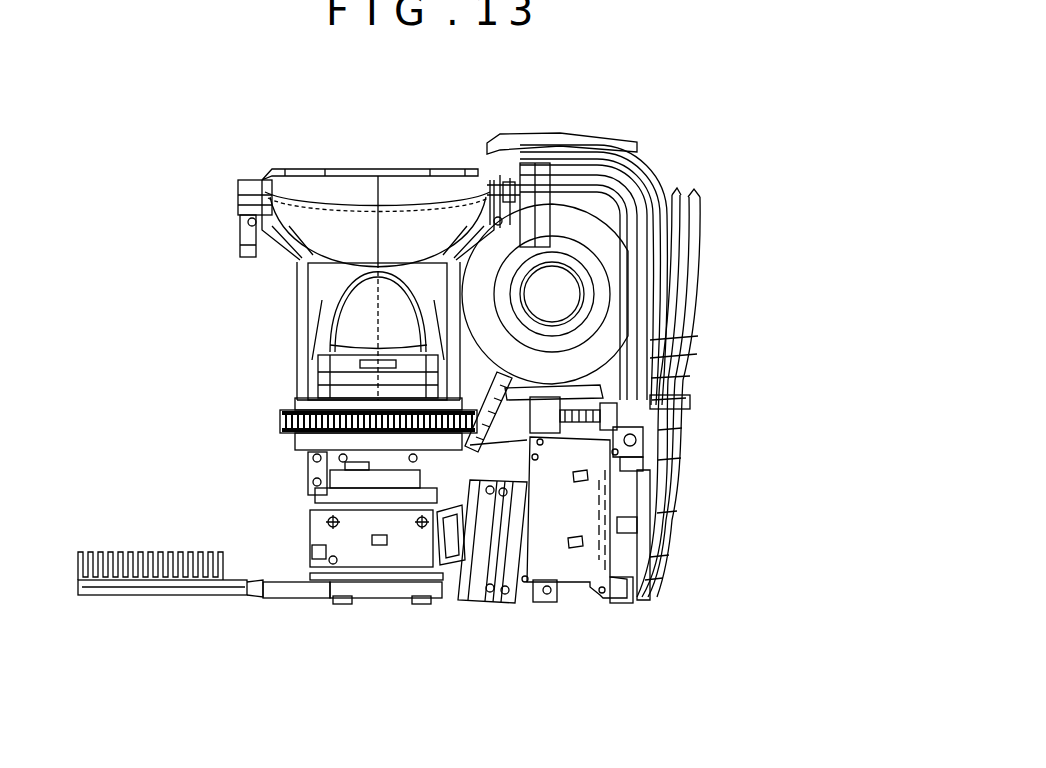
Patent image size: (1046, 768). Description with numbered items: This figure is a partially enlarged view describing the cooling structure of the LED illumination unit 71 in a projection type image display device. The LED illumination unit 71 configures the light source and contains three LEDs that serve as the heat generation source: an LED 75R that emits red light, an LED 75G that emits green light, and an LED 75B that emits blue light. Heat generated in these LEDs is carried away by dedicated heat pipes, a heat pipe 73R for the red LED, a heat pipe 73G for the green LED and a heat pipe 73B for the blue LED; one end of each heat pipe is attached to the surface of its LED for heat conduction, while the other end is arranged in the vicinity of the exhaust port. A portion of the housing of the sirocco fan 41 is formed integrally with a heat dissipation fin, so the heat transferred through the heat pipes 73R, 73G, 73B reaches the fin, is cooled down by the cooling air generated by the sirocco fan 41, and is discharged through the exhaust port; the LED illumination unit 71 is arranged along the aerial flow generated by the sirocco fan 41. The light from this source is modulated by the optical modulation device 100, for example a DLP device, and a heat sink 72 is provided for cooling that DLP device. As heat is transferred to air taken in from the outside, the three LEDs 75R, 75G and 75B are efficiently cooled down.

The sirocco fan 41 is at (603, 352).
The LED illumination unit 71 is at (547, 548).
The heat sink 72 is at (143, 590).
The heat pipe 73B is at (565, 187).
The heat pipe 73G is at (638, 180).
The heat pipe 73R is at (690, 265).
The LED 75B is at (687, 403).
The LED 75G is at (640, 563).
The LED 75R is at (640, 485).
The optical modulation device 100 is at (385, 585).